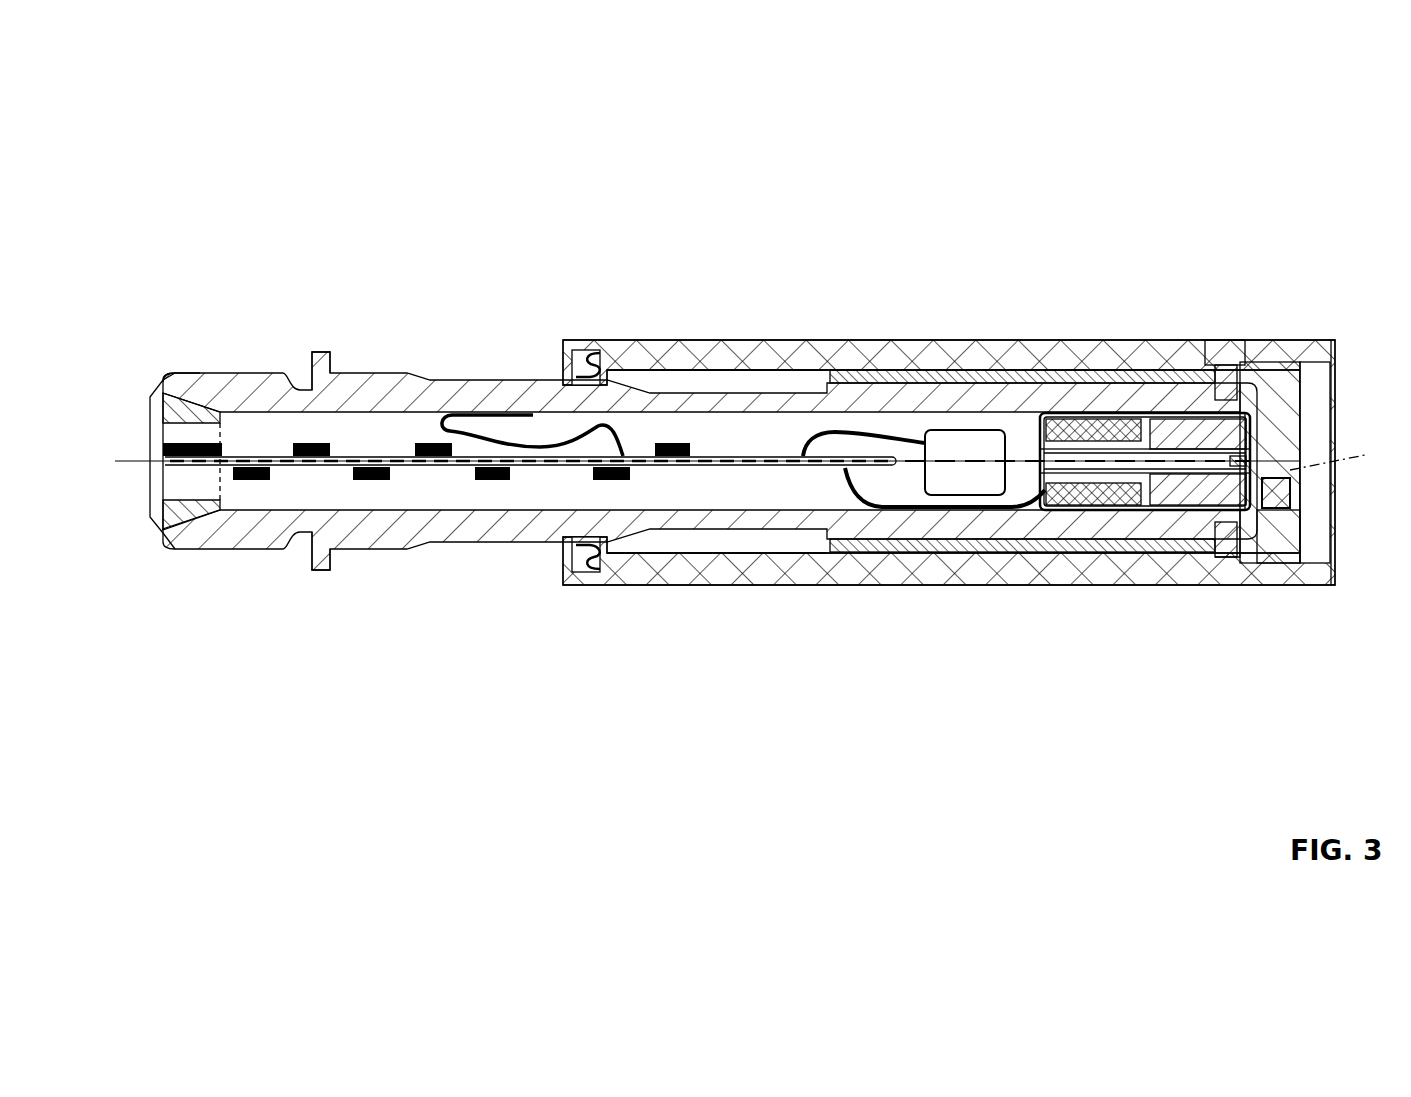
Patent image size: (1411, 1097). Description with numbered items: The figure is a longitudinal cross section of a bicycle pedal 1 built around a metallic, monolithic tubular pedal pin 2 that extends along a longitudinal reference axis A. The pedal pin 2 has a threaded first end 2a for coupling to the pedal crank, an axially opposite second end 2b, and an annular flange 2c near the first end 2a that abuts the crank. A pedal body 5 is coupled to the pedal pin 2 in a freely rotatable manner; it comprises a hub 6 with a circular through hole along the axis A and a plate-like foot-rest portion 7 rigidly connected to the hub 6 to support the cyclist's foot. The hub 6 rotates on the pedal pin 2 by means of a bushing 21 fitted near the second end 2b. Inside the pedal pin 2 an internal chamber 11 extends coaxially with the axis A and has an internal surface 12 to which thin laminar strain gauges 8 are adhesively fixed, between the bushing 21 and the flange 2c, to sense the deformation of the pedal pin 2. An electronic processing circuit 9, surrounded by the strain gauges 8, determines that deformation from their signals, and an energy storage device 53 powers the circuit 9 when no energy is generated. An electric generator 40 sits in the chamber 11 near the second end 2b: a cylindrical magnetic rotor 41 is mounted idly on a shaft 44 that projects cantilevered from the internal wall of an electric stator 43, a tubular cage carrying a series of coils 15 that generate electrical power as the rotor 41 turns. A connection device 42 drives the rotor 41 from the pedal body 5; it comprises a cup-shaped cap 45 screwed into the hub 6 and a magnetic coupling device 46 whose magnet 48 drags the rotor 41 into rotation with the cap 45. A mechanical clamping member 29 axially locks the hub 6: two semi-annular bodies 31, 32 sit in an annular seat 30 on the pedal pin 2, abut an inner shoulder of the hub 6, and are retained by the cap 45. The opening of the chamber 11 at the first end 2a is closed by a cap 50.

The pedal 1 is at (332, 590).
The pedal pin 2 is at (217, 548).
The first end 2a is at (175, 372).
The second end 2b is at (1257, 470).
The flange 2c is at (312, 350).
The pedal body 5 is at (640, 343).
The hub 6 is at (845, 362).
The foot-rest portion 7 is at (690, 335).
The strain gauges 8 is at (500, 415).
The electronic processing circuit 9 is at (447, 468).
The internal chamber 11 is at (474, 498).
The internal surface 12 is at (526, 502).
The coils 15 is at (1098, 490).
The bushing 21 is at (888, 372).
The mechanical clamping member 29 is at (1226, 340).
The annular seat 30 is at (1218, 527).
The semi-annular body 31 is at (1212, 363).
The semi-annular body 32 is at (1228, 560).
The electric generator 40 is at (1110, 393).
The magnetic rotor 41 is at (1182, 490).
The connection device 42 is at (1277, 505).
The electric stator 43 is at (1057, 515).
The shaft 44 is at (1098, 440).
The cap 45 is at (1280, 550).
The magnetic coupling device 46 is at (1287, 463).
The magnet 48 is at (1282, 505).
The cap 50 is at (150, 413).
The energy storage device 53 is at (948, 430).
The longitudinal reference axis A is at (1335, 424).